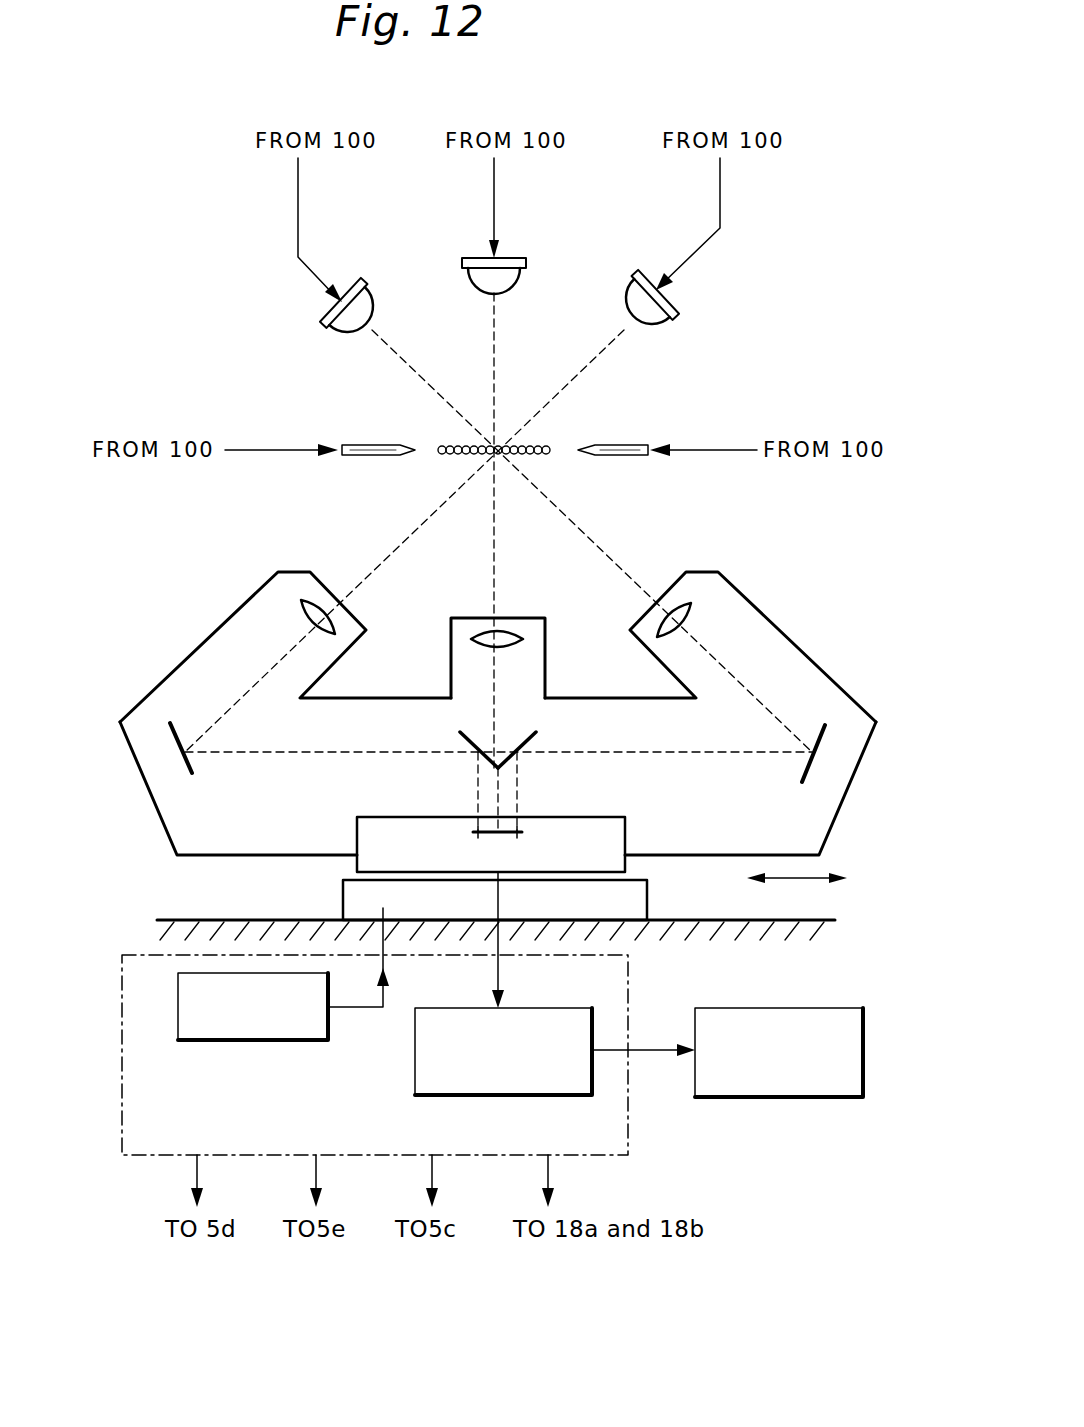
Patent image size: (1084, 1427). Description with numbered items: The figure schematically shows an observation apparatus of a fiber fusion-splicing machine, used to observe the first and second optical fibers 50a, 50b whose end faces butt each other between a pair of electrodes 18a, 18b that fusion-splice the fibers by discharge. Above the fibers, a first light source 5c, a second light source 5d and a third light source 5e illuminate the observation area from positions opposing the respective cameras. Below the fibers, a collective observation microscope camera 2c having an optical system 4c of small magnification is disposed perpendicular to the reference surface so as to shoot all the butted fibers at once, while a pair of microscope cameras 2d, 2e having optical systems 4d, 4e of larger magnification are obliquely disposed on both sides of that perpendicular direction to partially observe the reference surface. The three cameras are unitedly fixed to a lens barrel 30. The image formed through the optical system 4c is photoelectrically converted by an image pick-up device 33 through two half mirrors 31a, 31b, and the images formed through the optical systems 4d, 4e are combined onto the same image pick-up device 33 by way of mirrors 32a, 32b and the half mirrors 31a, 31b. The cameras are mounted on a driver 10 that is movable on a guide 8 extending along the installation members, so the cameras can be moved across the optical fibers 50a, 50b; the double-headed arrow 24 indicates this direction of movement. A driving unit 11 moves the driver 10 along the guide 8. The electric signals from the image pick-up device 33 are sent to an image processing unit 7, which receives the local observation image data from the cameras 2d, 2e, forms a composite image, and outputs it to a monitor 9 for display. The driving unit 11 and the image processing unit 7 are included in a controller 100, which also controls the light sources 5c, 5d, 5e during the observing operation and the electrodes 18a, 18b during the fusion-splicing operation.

The first light source 5c is at (525, 263).
The second light source 5d is at (673, 312).
The third light source 5e is at (333, 310).
The electrode 18a is at (357, 446).
The electrode 18b is at (625, 455).
The first optical fiber 50a is at (563, 436).
The second optical fiber 50b is at (592, 415).
The optical system 4c is at (512, 632).
The optical system 4d is at (312, 602).
The optical system 4e is at (688, 603).
The collective observation microscope camera 2c is at (451, 660).
The second microscope camera 2d is at (226, 622).
The third microscope camera 2e is at (786, 643).
The mirror 32a is at (172, 735).
The mirror 32b is at (820, 738).
The half mirror 31a is at (465, 737).
The half mirror 31b is at (523, 747).
The image pick-up device 33 is at (500, 833).
The lens barrel 30 is at (519, 694).
The guide 8 is at (252, 915).
The driver 10 is at (647, 902).
The moving direction 24 is at (798, 880).
The driving unit 11 is at (240, 1040).
The image processing unit 7 is at (528, 1095).
The monitor 9 is at (865, 1055).
The controller 100 is at (449, 1062).